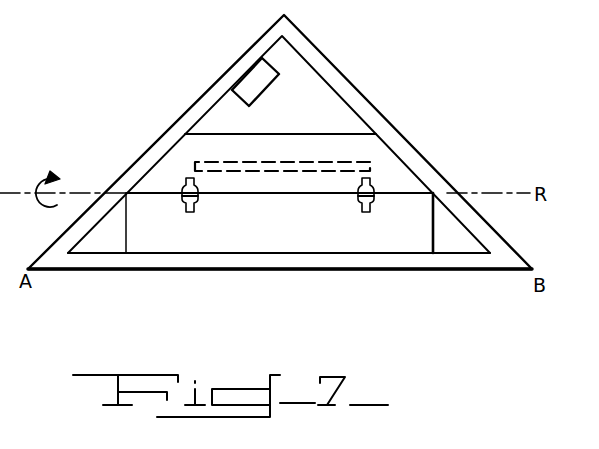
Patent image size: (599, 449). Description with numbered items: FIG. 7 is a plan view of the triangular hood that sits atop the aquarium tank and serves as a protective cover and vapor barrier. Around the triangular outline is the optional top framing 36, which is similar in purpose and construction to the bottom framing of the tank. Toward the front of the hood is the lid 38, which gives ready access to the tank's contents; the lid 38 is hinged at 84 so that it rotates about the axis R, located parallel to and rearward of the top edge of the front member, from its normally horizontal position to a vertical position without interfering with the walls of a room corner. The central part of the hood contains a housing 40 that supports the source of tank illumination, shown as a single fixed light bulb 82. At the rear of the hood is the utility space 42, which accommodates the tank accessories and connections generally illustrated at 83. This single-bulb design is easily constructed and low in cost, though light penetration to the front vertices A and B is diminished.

The top framing 36 is at (156, 149).
The lid 38 is at (352, 245).
The housing 40 is at (398, 170).
The utility space 42 is at (318, 103).
The light bulb 82 is at (200, 170).
The tank accessories and connections 83 is at (250, 82).
The hinge 84 is at (375, 192).